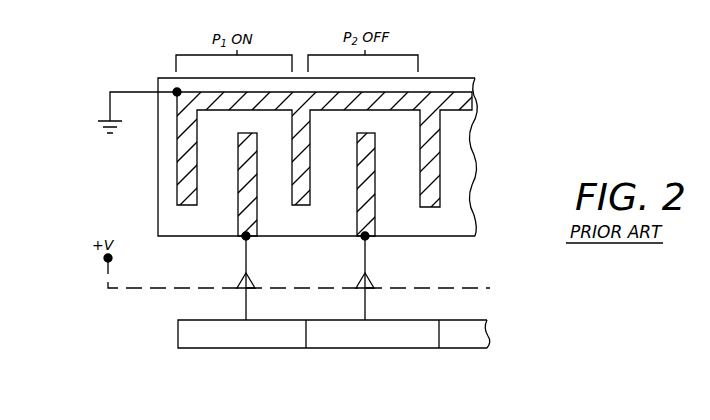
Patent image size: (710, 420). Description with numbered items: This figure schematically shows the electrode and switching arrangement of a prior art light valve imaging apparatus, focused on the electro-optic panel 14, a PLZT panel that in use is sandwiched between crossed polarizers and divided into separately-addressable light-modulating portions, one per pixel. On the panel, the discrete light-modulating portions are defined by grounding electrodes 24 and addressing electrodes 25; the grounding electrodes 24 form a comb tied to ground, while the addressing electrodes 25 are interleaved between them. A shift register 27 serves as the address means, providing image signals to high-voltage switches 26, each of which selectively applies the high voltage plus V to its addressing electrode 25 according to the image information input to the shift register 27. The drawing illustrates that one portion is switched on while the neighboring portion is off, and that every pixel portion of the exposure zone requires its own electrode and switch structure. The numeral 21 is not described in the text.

The electro-optic panel 14 is at (128, 193).
The substrate 21 is at (414, 225).
The grounding electrode 24 is at (188, 158).
The addressing electrode 25 is at (246, 212).
The high-voltage switch 26 is at (248, 281).
The shift register 27 is at (462, 331).